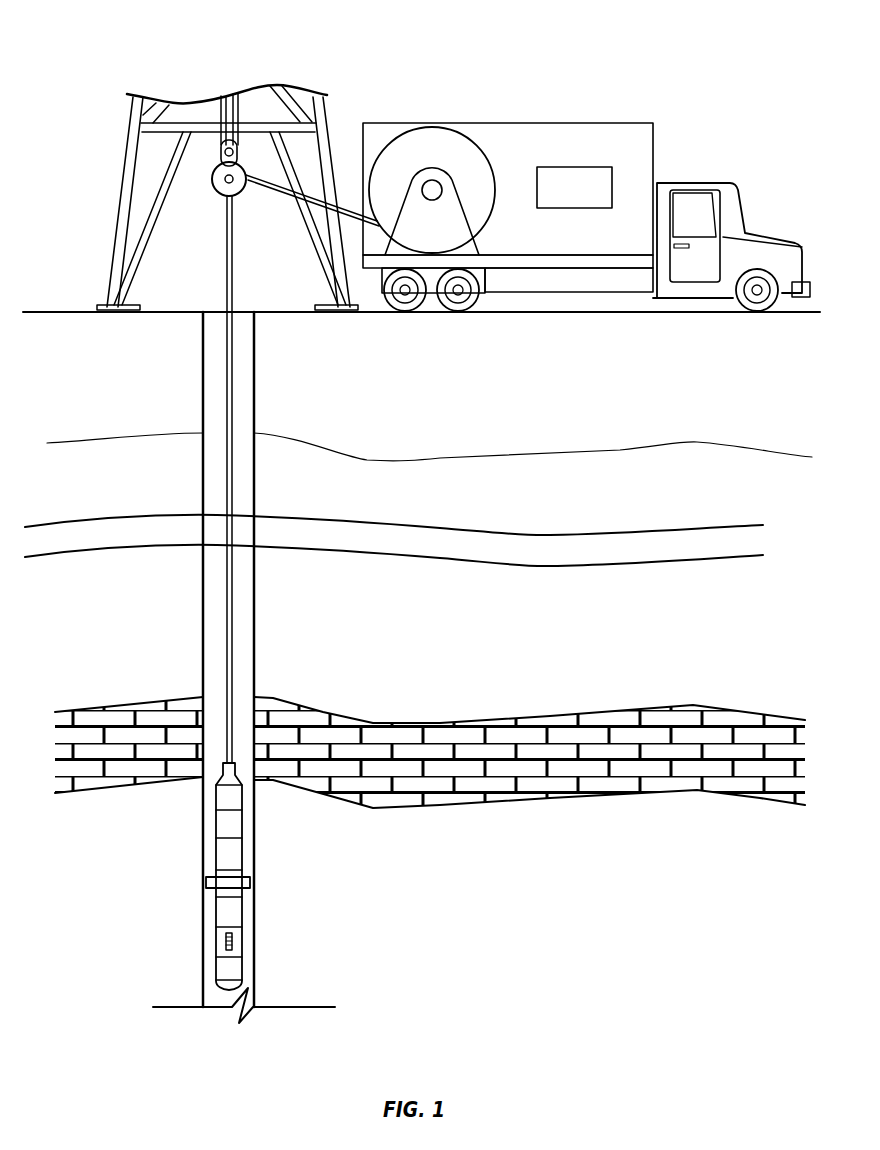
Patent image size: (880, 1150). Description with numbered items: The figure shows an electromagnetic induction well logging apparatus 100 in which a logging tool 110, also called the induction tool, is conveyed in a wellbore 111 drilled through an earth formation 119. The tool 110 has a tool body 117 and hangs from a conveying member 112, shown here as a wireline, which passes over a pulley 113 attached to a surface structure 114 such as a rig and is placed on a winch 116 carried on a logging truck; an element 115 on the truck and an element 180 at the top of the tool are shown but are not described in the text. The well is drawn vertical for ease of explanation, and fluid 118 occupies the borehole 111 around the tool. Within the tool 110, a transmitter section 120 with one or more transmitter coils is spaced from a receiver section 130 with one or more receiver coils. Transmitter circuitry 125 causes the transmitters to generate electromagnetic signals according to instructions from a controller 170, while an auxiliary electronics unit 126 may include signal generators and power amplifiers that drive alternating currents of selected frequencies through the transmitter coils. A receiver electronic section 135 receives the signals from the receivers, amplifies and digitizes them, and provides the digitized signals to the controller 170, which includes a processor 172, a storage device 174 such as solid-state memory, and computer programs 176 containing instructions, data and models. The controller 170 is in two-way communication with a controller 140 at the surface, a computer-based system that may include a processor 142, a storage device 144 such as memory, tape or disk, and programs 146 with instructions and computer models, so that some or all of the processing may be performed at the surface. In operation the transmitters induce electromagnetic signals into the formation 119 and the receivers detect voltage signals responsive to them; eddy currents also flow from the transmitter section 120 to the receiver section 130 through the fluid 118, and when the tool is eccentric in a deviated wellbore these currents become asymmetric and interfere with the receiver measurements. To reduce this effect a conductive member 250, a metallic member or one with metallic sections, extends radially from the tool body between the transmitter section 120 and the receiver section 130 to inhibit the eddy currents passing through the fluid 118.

The electromagnetic induction well logging apparatus 100 is at (147, 38).
The induction tool 110 is at (241, 880).
The wellbore 111 is at (203, 483).
The conveying member 112 is at (232, 485).
The pulley 113 is at (222, 196).
The surface structure 114 is at (122, 190).
The cable drum 115 is at (488, 133).
The winch 116 is at (407, 125).
The tool body 117 is at (210, 822).
The borehole fluid 118 is at (210, 975).
The earth formation 119 is at (548, 942).
The transmitter section 120 is at (222, 850).
The transmitter circuitry 125 is at (232, 825).
The auxiliary electronics unit 126 is at (248, 858).
The receiver section 130 is at (222, 908).
The receiver electronic section 135 is at (233, 945).
The surface controller 140 is at (650, 152).
The processor 142 is at (587, 167).
The storage device 144 is at (574, 187).
The programs 146 is at (592, 199).
The controller 170 is at (207, 927).
The processor 172 is at (230, 937).
The storage device 174 is at (227, 942).
The computer programs 176 is at (232, 950).
The cable head 180 is at (220, 785).
The conductive member 250 is at (250, 882).